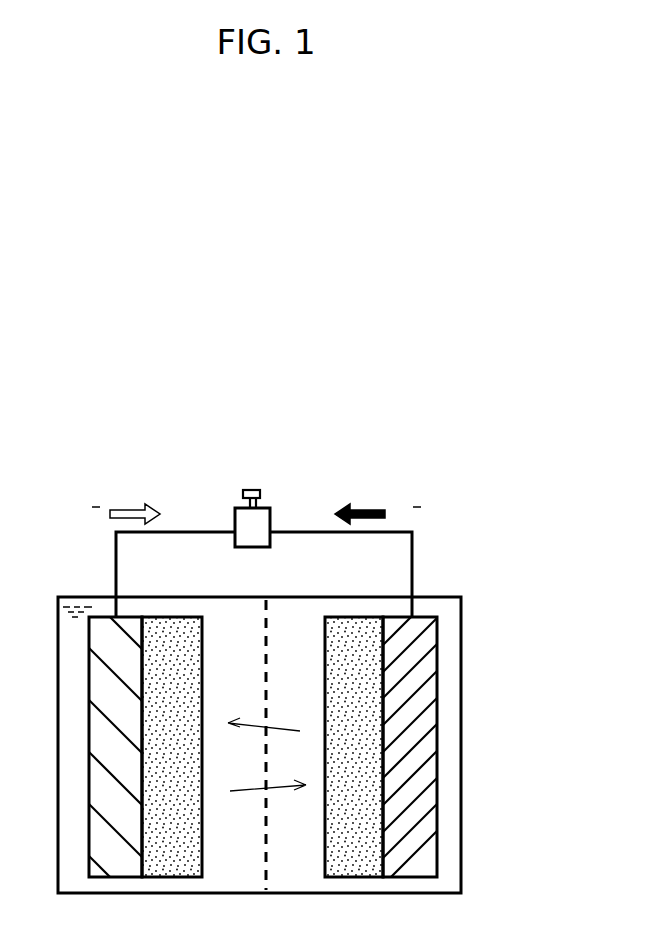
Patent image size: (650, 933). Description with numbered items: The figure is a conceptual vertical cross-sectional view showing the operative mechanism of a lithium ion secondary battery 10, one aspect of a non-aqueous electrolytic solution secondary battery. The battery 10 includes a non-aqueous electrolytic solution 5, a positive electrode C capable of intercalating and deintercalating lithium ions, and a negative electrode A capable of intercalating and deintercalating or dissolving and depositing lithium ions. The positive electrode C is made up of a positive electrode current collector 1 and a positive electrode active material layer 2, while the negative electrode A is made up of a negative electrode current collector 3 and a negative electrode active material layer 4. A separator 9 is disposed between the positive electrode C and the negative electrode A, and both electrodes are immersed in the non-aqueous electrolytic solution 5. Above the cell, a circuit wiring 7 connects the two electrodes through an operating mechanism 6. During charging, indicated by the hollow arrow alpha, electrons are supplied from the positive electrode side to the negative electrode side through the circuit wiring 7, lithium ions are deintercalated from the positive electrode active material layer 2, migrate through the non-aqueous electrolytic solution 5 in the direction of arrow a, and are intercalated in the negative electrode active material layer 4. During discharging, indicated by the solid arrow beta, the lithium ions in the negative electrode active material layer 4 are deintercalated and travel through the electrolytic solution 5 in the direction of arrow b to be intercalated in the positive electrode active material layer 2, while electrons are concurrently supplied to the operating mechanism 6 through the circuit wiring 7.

The positive electrode current collector 1 is at (99, 672).
The positive electrode active material layer 2 is at (168, 625).
The negative electrode current collector 3 is at (420, 698).
The negative electrode active material layer 4 is at (353, 628).
The non-aqueous electrolytic solution 5 is at (240, 877).
The operating mechanism 6 is at (270, 513).
The circuit wiring 7 is at (413, 549).
The separator 9 is at (258, 630).
The lithium ion secondary battery 10 is at (514, 552).